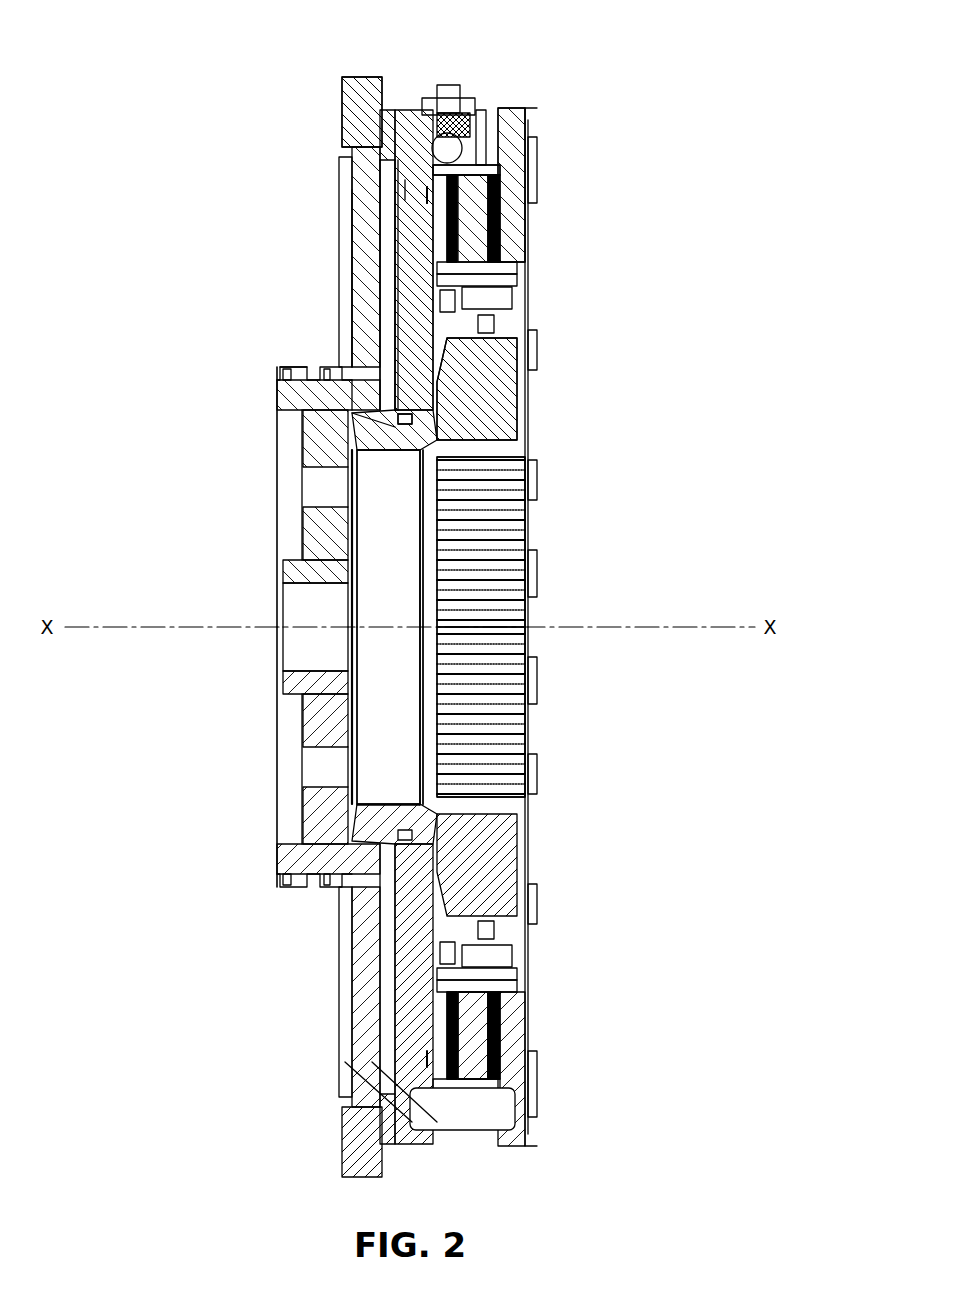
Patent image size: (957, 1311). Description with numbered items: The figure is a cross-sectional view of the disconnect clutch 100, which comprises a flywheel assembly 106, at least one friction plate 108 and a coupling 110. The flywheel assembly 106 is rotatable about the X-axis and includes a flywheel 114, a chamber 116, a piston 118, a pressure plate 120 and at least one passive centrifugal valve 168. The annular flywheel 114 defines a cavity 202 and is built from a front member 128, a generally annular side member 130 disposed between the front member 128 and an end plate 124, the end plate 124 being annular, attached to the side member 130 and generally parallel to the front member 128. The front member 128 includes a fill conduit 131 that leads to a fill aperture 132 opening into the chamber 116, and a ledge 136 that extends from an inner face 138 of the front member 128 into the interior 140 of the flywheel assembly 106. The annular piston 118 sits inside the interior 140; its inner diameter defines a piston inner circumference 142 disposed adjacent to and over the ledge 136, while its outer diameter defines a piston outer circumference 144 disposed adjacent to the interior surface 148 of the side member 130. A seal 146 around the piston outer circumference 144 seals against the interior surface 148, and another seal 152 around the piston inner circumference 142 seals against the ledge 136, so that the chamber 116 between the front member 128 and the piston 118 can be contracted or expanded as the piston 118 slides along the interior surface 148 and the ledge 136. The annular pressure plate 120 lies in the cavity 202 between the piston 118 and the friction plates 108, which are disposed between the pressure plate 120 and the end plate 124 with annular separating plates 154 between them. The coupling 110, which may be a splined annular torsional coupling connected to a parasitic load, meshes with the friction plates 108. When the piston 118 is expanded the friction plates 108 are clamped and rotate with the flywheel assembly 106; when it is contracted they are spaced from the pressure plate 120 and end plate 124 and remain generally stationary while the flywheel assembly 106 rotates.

The disconnect clutch 100 is at (673, 178).
The flywheel assembly 106 is at (452, 53).
The friction plate 108 is at (453, 183).
The coupling 110 is at (497, 385).
The flywheel 114 is at (362, 290).
The chamber 116 is at (387, 258).
The piston 118 is at (408, 232).
The pressure plate 120 is at (435, 243).
The end plate 124 is at (520, 128).
The front member 128 is at (368, 210).
The side member 130 is at (403, 122).
The fill conduit 131 is at (310, 365).
The fill aperture 132 is at (378, 400).
The ledge 136 is at (427, 438).
The inner face 138 is at (355, 737).
The interior 140 is at (418, 513).
The piston inner circumference 142 is at (427, 422).
The piston outer circumference 144 is at (427, 190).
The seal 146 is at (407, 188).
The interior surface 148 is at (418, 178).
The seal 152 is at (405, 425).
The separating plate 154 is at (472, 1047).
The passive centrifugal valve 168 is at (468, 83).
The cavity 202 is at (398, 323).